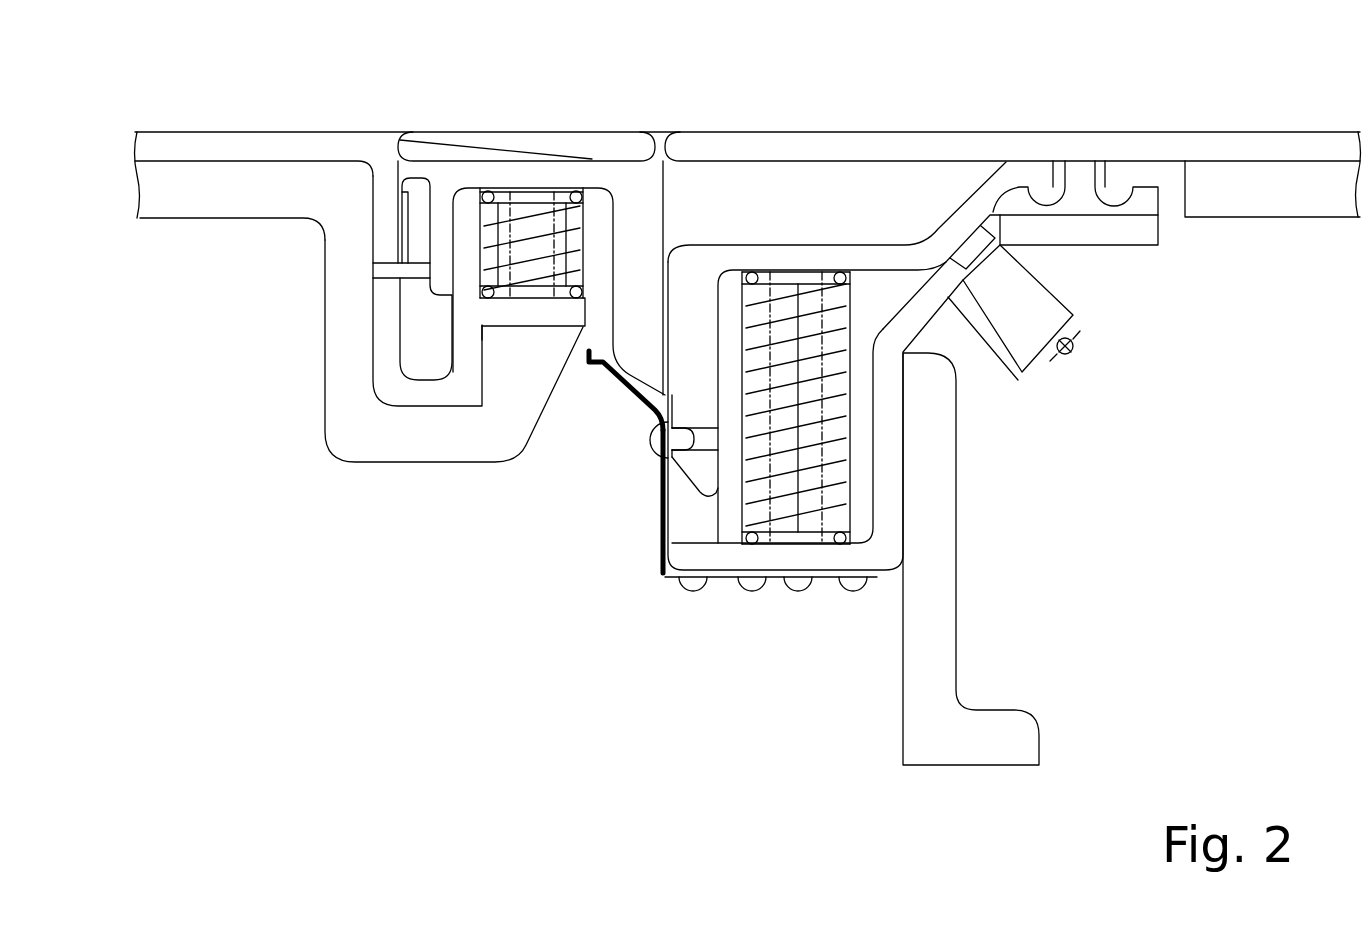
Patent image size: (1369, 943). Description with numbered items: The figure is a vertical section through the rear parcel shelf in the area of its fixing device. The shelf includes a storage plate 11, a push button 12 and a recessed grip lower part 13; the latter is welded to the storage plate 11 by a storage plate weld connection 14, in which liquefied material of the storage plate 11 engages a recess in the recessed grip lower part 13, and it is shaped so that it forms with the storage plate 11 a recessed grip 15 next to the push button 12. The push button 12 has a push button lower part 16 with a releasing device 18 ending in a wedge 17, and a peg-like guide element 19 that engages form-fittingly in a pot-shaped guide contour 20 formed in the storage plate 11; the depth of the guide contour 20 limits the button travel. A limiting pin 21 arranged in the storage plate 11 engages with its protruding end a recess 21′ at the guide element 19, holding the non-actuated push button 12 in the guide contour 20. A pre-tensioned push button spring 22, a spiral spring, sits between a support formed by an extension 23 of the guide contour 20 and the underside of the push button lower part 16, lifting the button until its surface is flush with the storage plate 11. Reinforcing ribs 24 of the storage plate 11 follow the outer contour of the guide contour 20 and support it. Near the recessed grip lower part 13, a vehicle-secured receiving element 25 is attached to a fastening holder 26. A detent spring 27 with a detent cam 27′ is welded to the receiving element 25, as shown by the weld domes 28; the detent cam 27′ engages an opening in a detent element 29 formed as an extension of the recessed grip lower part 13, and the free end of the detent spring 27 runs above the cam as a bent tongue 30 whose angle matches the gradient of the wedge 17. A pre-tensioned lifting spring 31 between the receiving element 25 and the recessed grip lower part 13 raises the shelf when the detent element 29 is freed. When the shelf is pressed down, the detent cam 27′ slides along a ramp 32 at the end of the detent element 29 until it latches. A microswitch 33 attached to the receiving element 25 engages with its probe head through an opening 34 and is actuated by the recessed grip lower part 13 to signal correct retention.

The storage plate 11 is at (214, 148).
The push button 12 is at (548, 121).
The recessed grip lower part 13 is at (776, 262).
The storage plate weld connection 14 is at (1107, 200).
The recessed grip 15 is at (861, 190).
The push button lower part 16 is at (600, 176).
The wedge 17 is at (637, 323).
The releasing device 18 is at (646, 212).
The guide element 19 is at (437, 290).
The guide contour 20 is at (407, 390).
The limiting pin 21 is at (380, 272).
The recess 21′ is at (417, 192).
The push button spring 22 is at (511, 235).
The extension 23 is at (513, 310).
The reinforcing ribs 24 is at (206, 198).
The receiving element 25 is at (928, 325).
The fastening holder 26 is at (933, 600).
The detent spring 27 is at (680, 438).
The detent cam 27′ is at (628, 373).
The weld domes 28 is at (693, 592).
The detent element 29 is at (703, 395).
The bent tongue 30 is at (606, 331).
The lifting spring 31 is at (833, 453).
The ramp 32 is at (700, 495).
The microswitch 33 is at (1030, 310).
The opening 34 is at (987, 213).